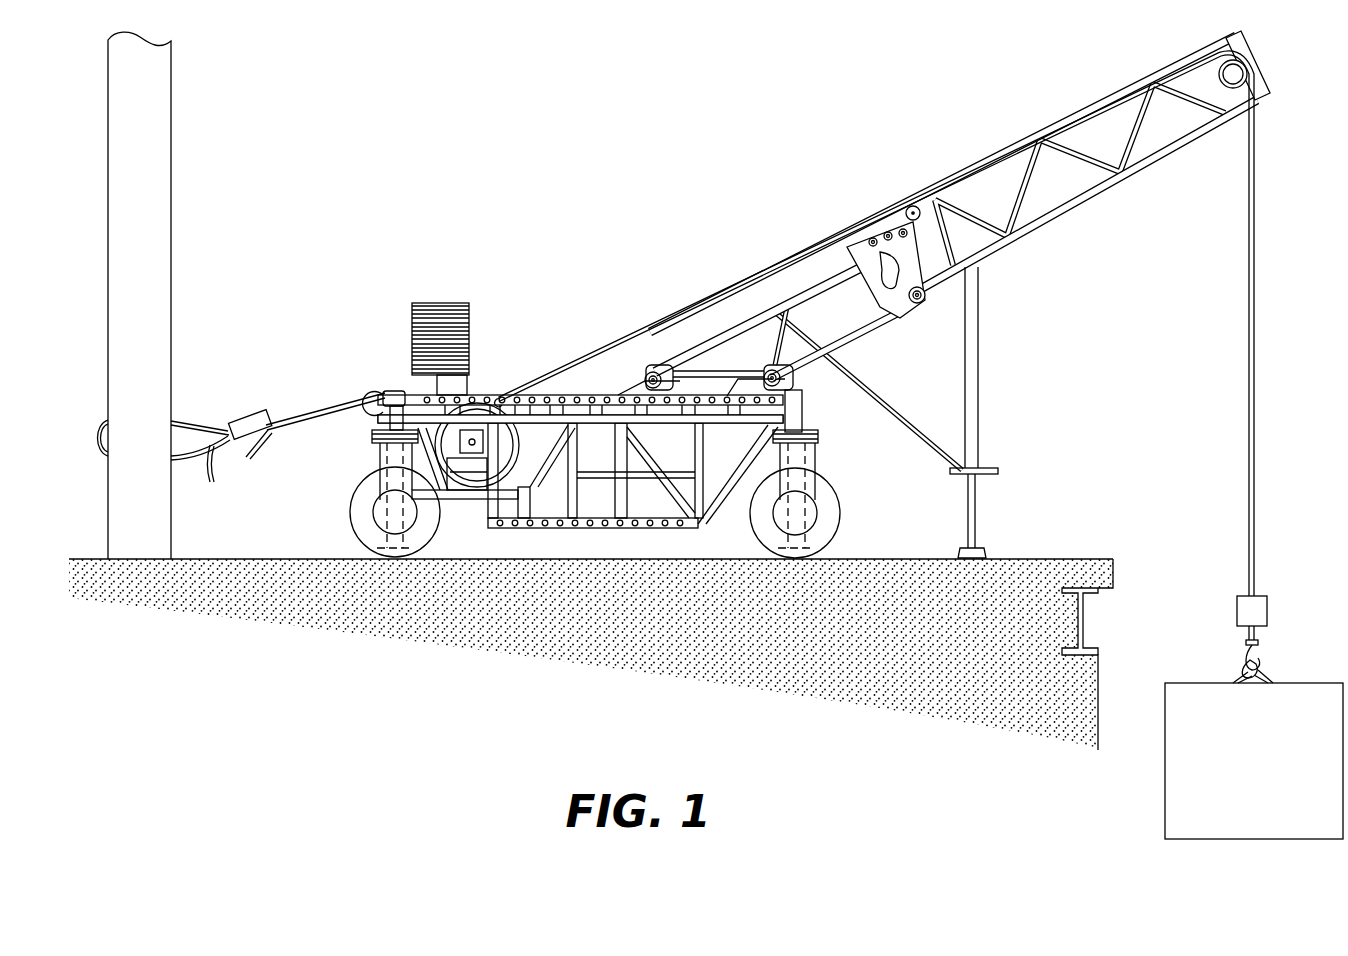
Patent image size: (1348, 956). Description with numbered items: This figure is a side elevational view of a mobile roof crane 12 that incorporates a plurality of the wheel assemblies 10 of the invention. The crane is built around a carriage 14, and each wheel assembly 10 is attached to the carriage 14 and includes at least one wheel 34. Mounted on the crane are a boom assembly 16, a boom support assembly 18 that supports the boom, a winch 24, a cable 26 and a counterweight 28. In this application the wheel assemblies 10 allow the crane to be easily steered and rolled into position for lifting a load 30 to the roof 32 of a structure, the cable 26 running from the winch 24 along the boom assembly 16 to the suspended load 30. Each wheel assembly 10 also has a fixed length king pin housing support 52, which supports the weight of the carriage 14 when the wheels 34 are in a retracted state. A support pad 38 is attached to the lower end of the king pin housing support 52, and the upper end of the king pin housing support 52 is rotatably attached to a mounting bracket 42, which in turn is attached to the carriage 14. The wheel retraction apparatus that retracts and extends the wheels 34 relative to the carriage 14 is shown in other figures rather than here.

The wheel assembly 10 is at (346, 480).
The mobile roof crane 12 is at (748, 226).
The carriage 14 is at (542, 395).
The boom assembly 16 is at (1124, 83).
The boom support assembly 18 is at (990, 341).
The winch 24 is at (492, 403).
The cable 26 is at (602, 345).
The counterweight 28 is at (466, 316).
The load 30 is at (1203, 695).
The roof 32 is at (1063, 586).
The wheel 34 is at (390, 520).
The support pad 38 is at (388, 548).
The mounting bracket 42 is at (398, 396).
The king pin housing support 52 is at (385, 455).